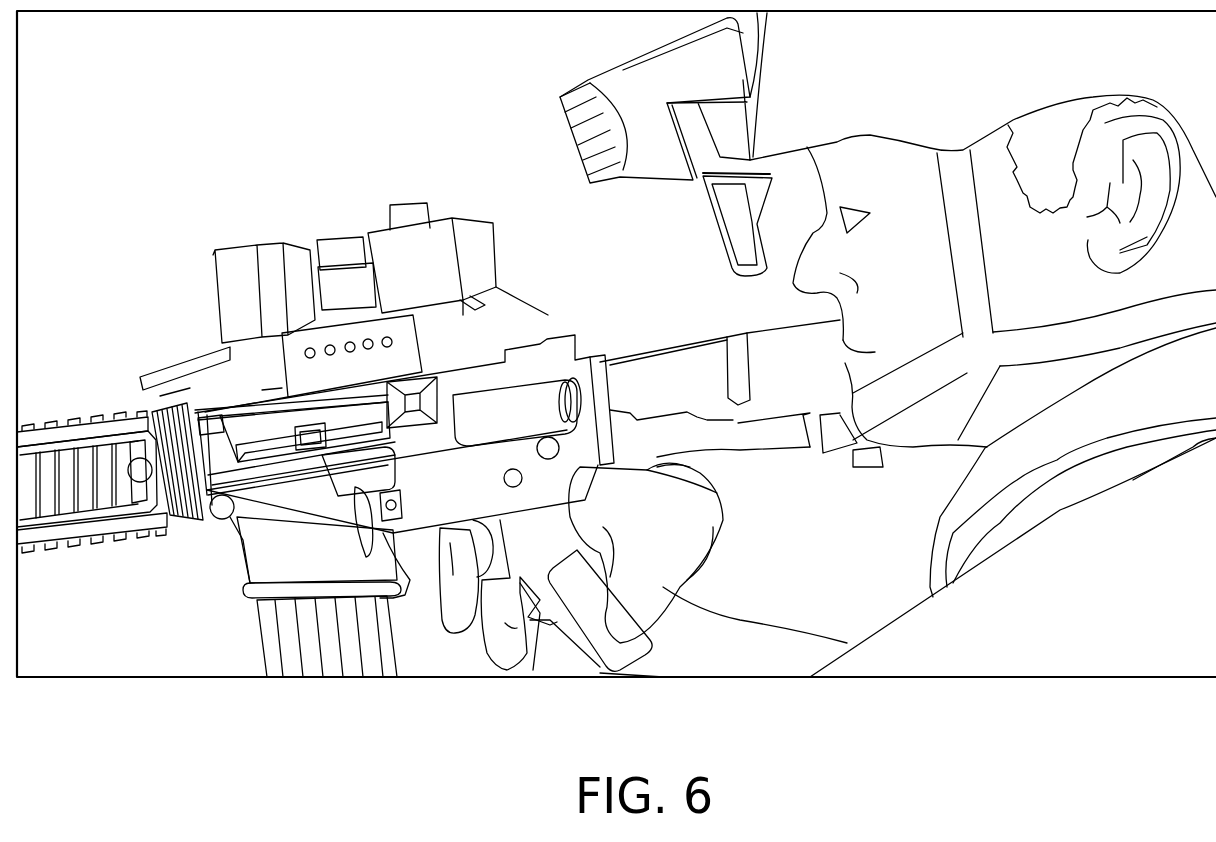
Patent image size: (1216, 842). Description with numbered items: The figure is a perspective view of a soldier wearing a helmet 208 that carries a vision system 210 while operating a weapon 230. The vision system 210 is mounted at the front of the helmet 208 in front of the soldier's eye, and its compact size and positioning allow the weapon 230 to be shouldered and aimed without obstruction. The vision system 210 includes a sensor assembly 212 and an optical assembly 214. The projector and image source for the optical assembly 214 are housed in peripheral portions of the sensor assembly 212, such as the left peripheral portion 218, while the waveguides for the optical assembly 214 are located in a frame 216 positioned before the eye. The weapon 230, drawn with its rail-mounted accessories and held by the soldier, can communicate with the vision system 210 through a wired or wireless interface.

The helmet 208 is at (797, 120).
The vision system 210 is at (440, 104).
The sensor assembly 212 is at (633, 60).
The optical assembly 214 is at (682, 172).
The frame 216 is at (730, 258).
The left peripheral portion 218 is at (727, 137).
The weapon 230 is at (100, 407).